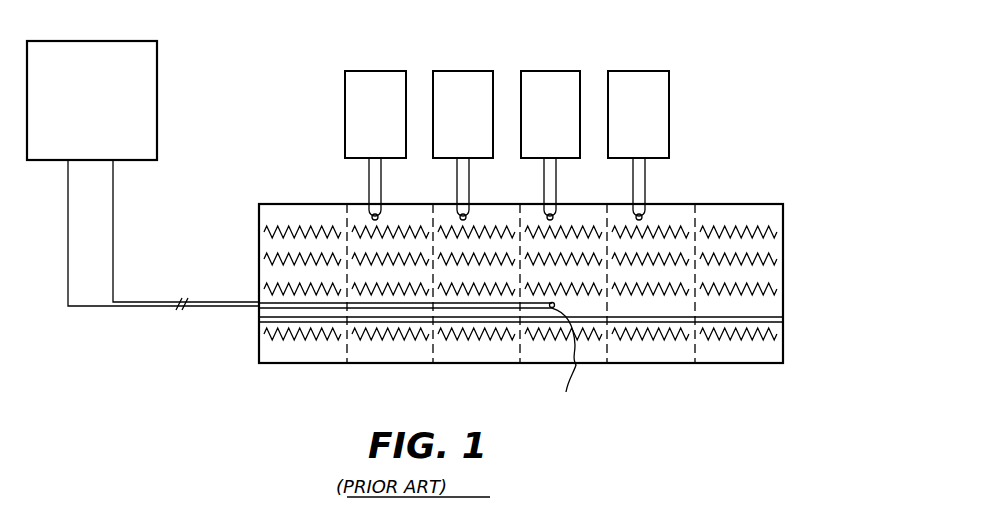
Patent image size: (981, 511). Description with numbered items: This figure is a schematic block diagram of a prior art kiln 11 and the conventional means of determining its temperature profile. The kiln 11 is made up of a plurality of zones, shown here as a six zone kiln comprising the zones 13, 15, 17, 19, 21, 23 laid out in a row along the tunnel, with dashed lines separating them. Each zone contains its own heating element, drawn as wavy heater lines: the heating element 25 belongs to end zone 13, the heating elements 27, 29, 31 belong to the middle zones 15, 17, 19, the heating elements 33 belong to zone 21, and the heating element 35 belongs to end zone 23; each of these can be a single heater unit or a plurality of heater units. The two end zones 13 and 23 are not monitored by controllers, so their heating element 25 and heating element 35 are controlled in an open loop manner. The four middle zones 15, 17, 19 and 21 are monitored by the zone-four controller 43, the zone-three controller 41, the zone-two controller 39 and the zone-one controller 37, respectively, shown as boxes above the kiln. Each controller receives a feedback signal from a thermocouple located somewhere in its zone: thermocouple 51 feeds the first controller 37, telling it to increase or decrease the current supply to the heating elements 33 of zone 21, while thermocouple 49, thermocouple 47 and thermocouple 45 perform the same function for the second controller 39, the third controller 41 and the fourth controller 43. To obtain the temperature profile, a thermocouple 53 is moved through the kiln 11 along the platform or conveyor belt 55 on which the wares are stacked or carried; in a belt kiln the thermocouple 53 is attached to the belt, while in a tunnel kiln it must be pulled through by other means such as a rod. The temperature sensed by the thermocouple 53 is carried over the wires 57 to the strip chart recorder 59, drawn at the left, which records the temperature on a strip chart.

The kiln 11 is at (750, 201).
The end zone 13 is at (750, 366).
The zone 15 is at (657, 366).
The zone 17 is at (547, 366).
The zone 19 is at (465, 366).
The zone 21 is at (376, 366).
The end zone 23 is at (285, 366).
The heating element 25 is at (760, 234).
The heating element 27 is at (665, 227).
The heating element 29 is at (562, 227).
The heating element 31 is at (472, 227).
The heating element 33 is at (392, 227).
The heating element 35 is at (278, 226).
The zone 1 controller 37 is at (370, 70).
The zone 2 controller 39 is at (464, 70).
The zone 3 controller 41 is at (560, 70).
The zone 4 controller 43 is at (662, 70).
The thermocouple 45 is at (642, 215).
The thermocouple 47 is at (548, 215).
The thermocouple 49 is at (460, 215).
The thermocouple 51 is at (372, 216).
The thermocouple 53 is at (572, 361).
The conveyor belt 55 is at (775, 317).
The wires 57 is at (146, 310).
The strip chart recorder 59 is at (150, 40).